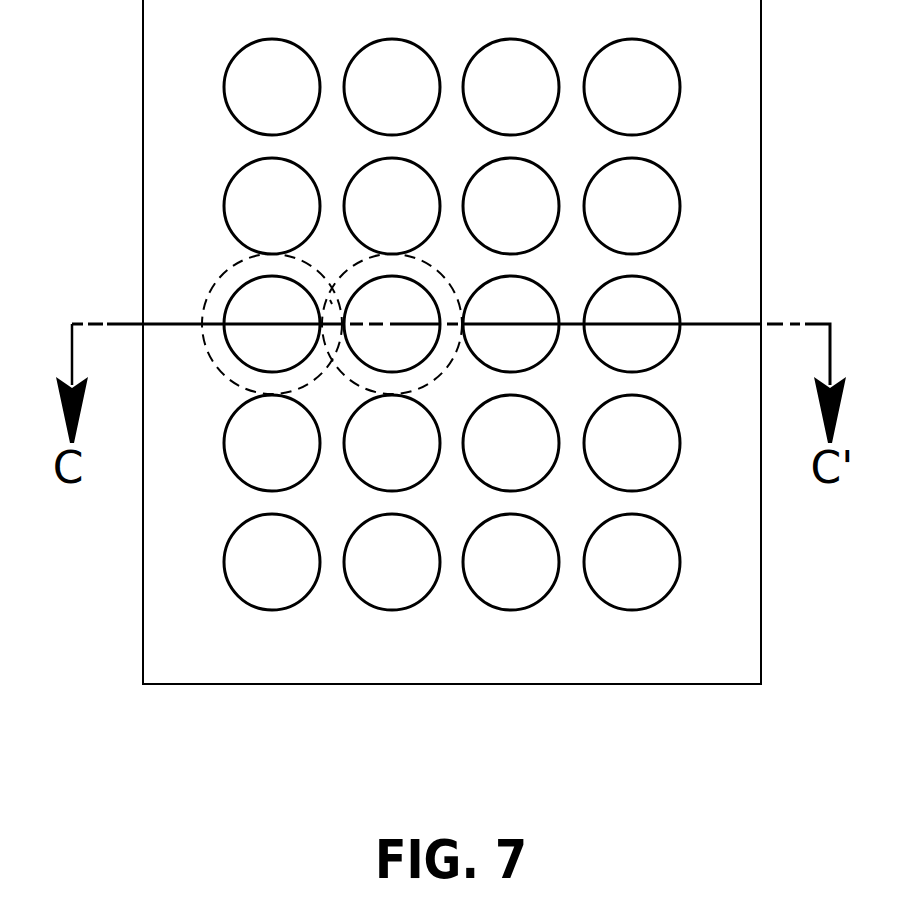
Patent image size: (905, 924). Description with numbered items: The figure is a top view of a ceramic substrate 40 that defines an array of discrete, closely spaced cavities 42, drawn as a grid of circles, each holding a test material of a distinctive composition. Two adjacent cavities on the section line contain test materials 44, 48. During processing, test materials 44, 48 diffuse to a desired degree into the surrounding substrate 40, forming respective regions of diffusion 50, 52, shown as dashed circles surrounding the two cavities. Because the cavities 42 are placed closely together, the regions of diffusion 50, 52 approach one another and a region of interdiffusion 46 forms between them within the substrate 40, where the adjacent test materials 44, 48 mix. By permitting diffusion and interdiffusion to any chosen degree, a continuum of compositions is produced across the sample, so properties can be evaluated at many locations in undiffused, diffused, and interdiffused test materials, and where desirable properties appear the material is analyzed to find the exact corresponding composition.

The substrate 40 is at (525, 684).
The cavities 42 is at (647, 603).
The test material 44 is at (258, 347).
The region of interdiffusion 46 is at (330, 300).
The test material 48 is at (407, 345).
The region of diffusion 50 is at (213, 302).
The region of diffusion 52 is at (350, 280).